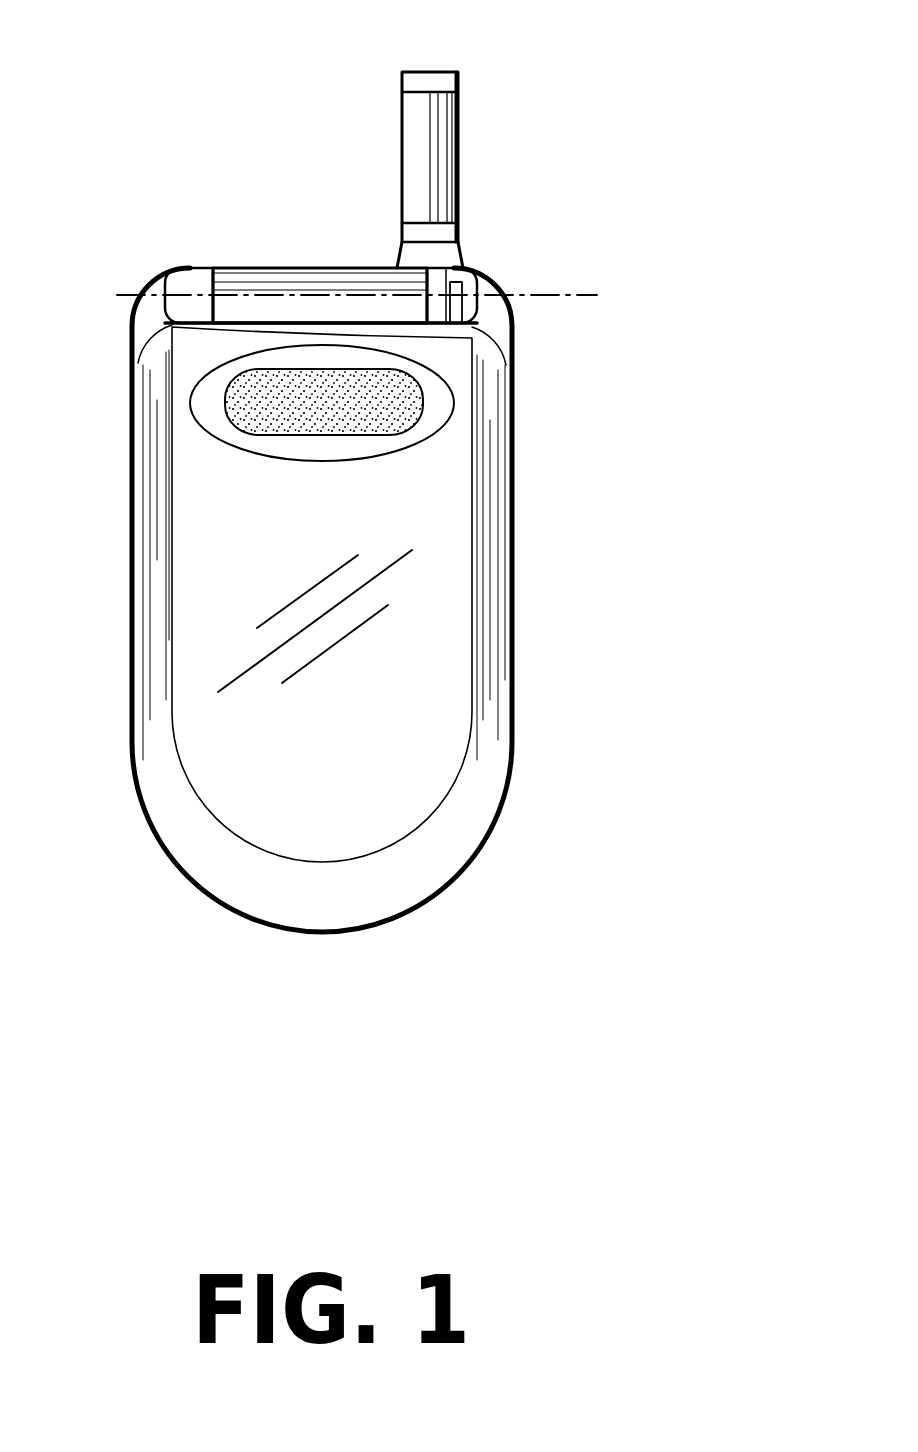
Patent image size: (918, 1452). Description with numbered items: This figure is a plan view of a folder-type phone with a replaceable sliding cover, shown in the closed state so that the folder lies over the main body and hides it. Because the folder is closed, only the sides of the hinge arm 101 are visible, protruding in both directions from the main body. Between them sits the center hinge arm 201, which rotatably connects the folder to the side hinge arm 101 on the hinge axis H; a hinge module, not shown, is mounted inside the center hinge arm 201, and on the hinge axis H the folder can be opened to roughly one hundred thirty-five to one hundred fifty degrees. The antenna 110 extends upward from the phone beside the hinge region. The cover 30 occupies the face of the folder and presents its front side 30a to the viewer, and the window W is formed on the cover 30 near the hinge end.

The cover 30 is at (292, 813).
The front side 30a is at (410, 782).
The window W is at (280, 418).
The center hinge arm 201 is at (302, 293).
The hinge arm 101 is at (180, 298).
The antenna 110 is at (413, 175).
The hinge axis H is at (519, 293).